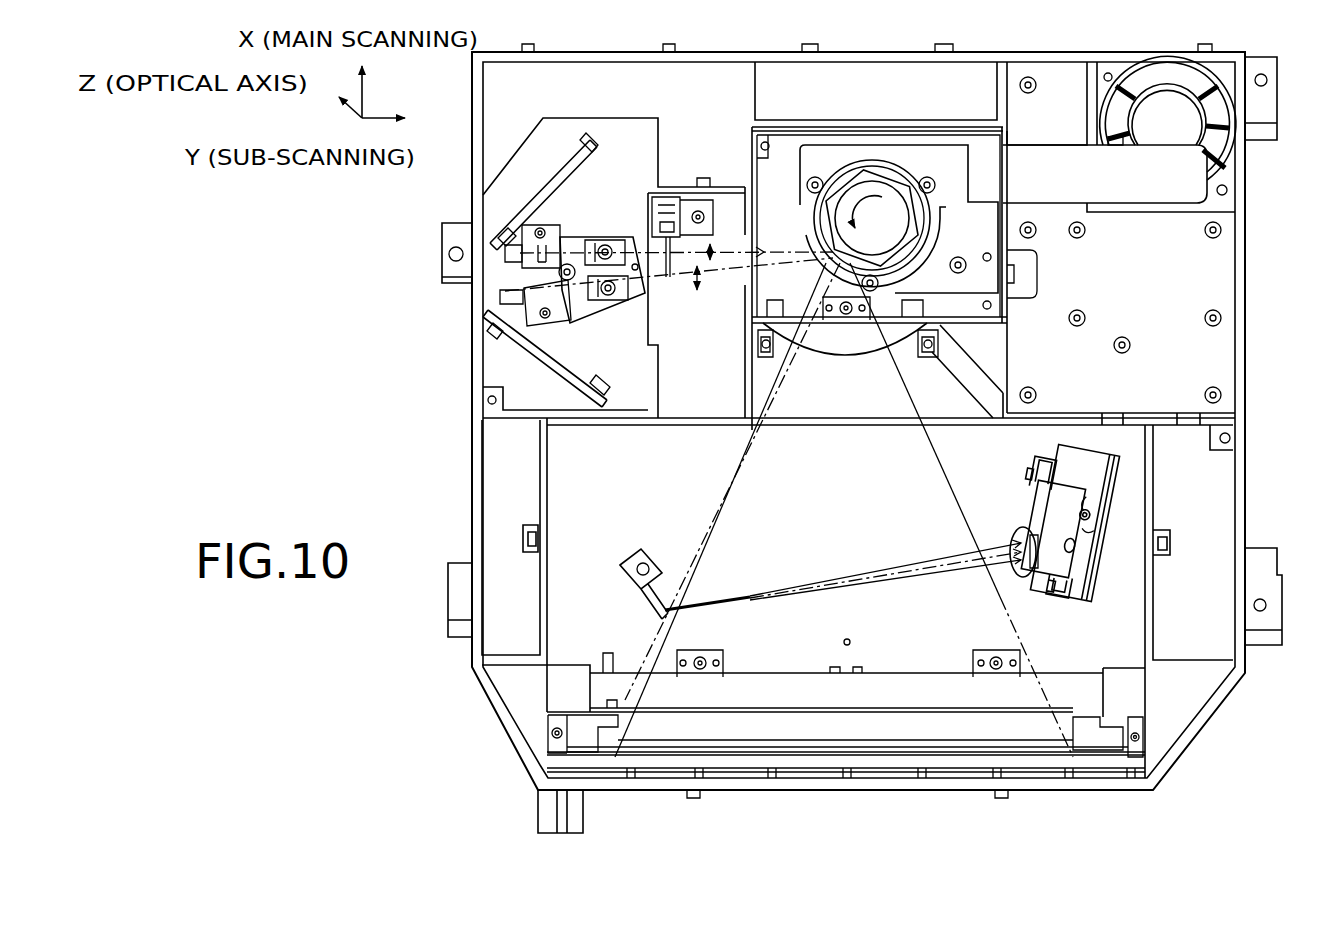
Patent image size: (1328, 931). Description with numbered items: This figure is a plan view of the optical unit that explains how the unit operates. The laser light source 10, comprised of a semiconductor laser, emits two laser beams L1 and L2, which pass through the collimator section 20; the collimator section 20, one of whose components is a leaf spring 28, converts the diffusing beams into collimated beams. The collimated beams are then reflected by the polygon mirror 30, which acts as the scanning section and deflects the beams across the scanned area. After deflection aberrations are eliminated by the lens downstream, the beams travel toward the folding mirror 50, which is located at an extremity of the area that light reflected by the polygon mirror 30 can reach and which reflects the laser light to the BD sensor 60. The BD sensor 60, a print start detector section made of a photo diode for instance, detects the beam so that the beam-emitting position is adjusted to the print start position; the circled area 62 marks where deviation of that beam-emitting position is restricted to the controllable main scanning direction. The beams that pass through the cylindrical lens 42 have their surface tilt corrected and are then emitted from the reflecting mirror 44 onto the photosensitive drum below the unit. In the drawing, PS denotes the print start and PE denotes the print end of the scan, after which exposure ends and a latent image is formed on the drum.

The laser light source 10 is at (568, 230).
The collimator section 20 is at (497, 325).
The leaf spring 28 is at (497, 268).
The polygon mirror 30 is at (888, 183).
The cylindrical lens 42 is at (848, 340).
The reflecting mirror 44 is at (962, 770).
The folding mirror 50 is at (630, 604).
The BD sensor 60 is at (1083, 548).
The circled area 62 is at (1016, 532).
The print start PS is at (594, 735).
The print end PE is at (1096, 741).
The laser beam L1 is at (676, 238).
The laser beam L2 is at (669, 286).